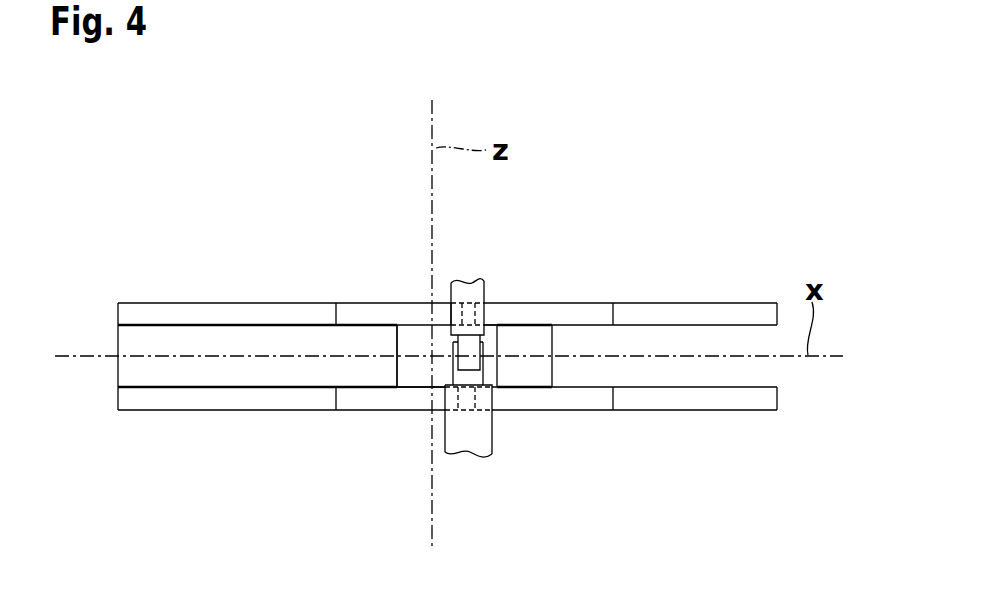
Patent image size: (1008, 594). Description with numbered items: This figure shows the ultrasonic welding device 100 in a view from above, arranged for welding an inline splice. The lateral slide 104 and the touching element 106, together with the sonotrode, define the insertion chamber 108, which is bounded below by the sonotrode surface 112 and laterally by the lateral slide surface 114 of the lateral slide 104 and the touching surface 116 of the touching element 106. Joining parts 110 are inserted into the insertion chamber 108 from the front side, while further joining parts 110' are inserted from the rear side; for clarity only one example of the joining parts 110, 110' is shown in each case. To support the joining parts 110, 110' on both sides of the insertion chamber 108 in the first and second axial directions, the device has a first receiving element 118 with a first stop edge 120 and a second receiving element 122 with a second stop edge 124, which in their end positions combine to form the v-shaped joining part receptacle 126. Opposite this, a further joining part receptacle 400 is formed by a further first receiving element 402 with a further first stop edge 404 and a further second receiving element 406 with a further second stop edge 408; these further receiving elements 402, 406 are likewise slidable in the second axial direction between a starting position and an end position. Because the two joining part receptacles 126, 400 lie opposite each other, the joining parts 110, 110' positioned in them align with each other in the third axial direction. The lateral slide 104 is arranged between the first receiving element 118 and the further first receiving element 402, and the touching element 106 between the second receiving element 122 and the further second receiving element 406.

The ultrasonic welding device 100 is at (124, 188).
The lateral slide 104 is at (122, 380).
The touching element 106 is at (545, 340).
The insertion chamber 108 is at (398, 316).
The joining parts 110 is at (470, 457).
The further joining parts 110' is at (475, 269).
The sonotrode surface 112 is at (426, 335).
The lateral slide surface 114 is at (409, 376).
The touching surface 116 is at (478, 372).
The first receiving element 118 is at (223, 400).
The first stop edge 120 is at (345, 400).
The second receiving element 122 is at (720, 400).
The second stop edge 124 is at (586, 400).
The joining part receptacle 126 is at (420, 396).
The further joining part receptacle 400 is at (519, 289).
The further first receiving element 402 is at (223, 308).
The further first stop edge 404 is at (345, 308).
The further second receiving element 406 is at (720, 308).
The further second stop edge 408 is at (586, 308).